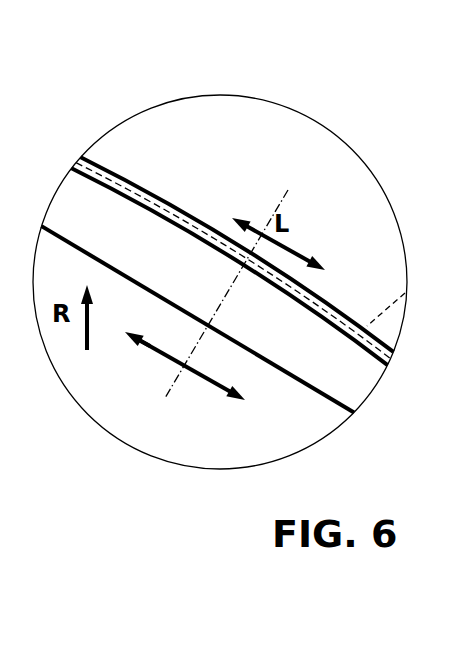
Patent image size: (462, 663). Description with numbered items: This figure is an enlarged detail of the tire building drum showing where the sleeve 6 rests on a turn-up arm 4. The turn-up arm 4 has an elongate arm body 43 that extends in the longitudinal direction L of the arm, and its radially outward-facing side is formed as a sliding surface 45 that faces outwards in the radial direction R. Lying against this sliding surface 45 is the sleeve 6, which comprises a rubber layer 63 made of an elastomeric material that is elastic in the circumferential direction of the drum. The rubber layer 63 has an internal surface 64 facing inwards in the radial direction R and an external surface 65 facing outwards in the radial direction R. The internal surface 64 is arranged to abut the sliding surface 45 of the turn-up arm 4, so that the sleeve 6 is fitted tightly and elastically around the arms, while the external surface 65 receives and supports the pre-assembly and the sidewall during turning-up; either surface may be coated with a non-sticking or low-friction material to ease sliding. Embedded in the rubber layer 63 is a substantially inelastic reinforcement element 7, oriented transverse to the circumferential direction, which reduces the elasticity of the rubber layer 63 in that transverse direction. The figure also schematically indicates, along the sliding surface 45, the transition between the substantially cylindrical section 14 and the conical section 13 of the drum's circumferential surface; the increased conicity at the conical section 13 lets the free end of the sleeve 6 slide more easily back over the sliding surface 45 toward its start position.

The turn-up arm 4 is at (215, 360).
The arm body 43 is at (325, 383).
The sleeve 6 is at (108, 166).
The reinforcement element 7 is at (407, 292).
The conical section 13 is at (192, 388).
The right cylindrical section 14 is at (126, 351).
The sliding surface 45 is at (218, 250).
The rubber layer 63 is at (137, 190).
The internal surface 64 is at (187, 223).
The external surface 65 is at (256, 202).